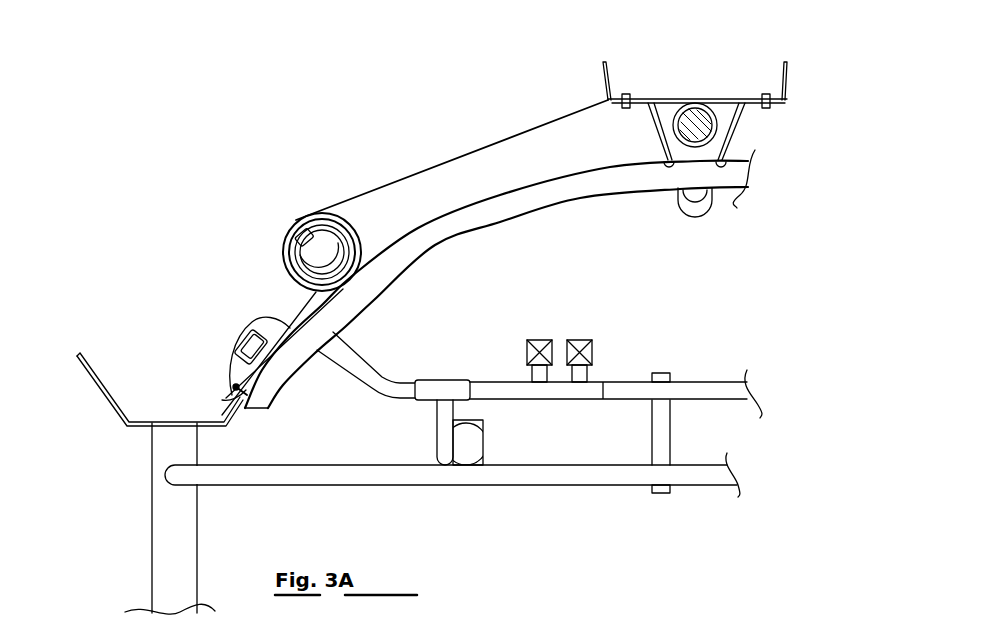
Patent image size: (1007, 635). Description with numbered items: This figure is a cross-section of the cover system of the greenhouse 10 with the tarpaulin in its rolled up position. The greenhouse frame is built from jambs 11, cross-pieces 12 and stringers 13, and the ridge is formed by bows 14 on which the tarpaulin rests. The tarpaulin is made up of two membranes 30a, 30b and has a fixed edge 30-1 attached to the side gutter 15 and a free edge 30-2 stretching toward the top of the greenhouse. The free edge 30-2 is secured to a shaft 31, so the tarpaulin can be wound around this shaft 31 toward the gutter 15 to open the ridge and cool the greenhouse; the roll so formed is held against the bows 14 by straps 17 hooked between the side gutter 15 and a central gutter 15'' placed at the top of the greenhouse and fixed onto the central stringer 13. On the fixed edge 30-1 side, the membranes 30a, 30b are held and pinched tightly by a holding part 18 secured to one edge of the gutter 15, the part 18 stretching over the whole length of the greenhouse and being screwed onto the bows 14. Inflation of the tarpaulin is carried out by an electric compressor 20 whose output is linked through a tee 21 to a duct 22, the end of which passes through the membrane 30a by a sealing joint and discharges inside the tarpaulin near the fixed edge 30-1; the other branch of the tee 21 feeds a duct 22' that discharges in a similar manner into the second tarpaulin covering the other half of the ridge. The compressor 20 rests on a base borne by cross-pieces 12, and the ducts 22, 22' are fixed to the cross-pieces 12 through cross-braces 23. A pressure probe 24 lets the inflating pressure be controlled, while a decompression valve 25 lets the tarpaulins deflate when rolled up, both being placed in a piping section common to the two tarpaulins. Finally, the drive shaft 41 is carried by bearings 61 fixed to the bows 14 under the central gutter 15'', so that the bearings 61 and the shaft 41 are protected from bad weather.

The greenhouse 10 is at (208, 167).
The jamb 11 is at (178, 527).
The cross-piece 12 is at (345, 475).
The stringer 13 is at (695, 202).
The bow 14 is at (482, 220).
The gutter 15 is at (151, 353).
The central gutter 15'' is at (695, 63).
The strap 17 is at (533, 130).
The holding part 18 is at (237, 373).
The electric compressor 20 is at (483, 457).
The tee 21 is at (443, 388).
The duct 22 is at (371, 358).
The duct 22' is at (616, 369).
The cross-brace 23 is at (660, 450).
The pressure probe 24 is at (542, 338).
The decompression valve 25 is at (590, 335).
The fixed edge 30-1 is at (253, 322).
The free edge 30-2 is at (323, 215).
The membrane 30a is at (262, 300).
The membrane 30b is at (268, 302).
The shaft 31 is at (355, 233).
The drive shaft 41 is at (695, 120).
The bearing 61 is at (717, 147).